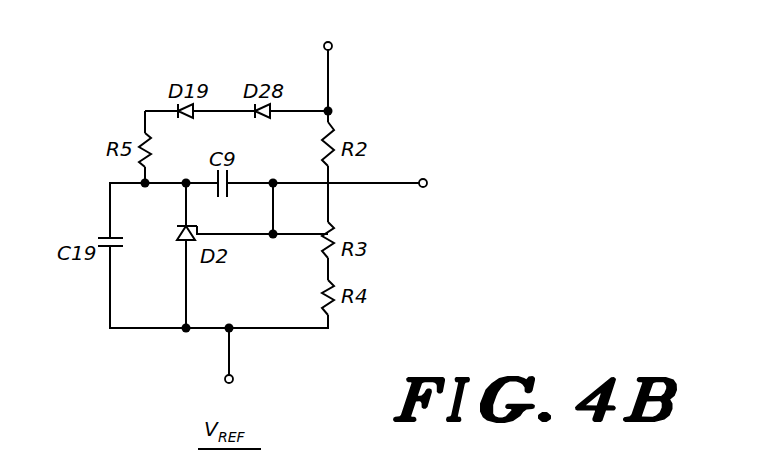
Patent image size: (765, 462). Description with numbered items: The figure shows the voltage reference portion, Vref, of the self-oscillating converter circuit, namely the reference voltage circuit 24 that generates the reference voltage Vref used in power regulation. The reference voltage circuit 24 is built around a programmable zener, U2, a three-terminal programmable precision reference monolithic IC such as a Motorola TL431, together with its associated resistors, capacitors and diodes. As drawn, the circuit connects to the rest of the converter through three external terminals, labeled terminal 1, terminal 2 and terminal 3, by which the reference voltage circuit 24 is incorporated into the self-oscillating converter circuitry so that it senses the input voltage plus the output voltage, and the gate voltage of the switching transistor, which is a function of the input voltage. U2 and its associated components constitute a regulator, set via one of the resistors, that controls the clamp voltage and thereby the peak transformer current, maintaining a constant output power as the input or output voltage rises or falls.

The terminal 1 (VREF) 1 is at (237, 386).
The terminal 2 is at (337, 49).
The terminal 3 is at (432, 185).
The reference voltage circuit 24 is at (403, 98).